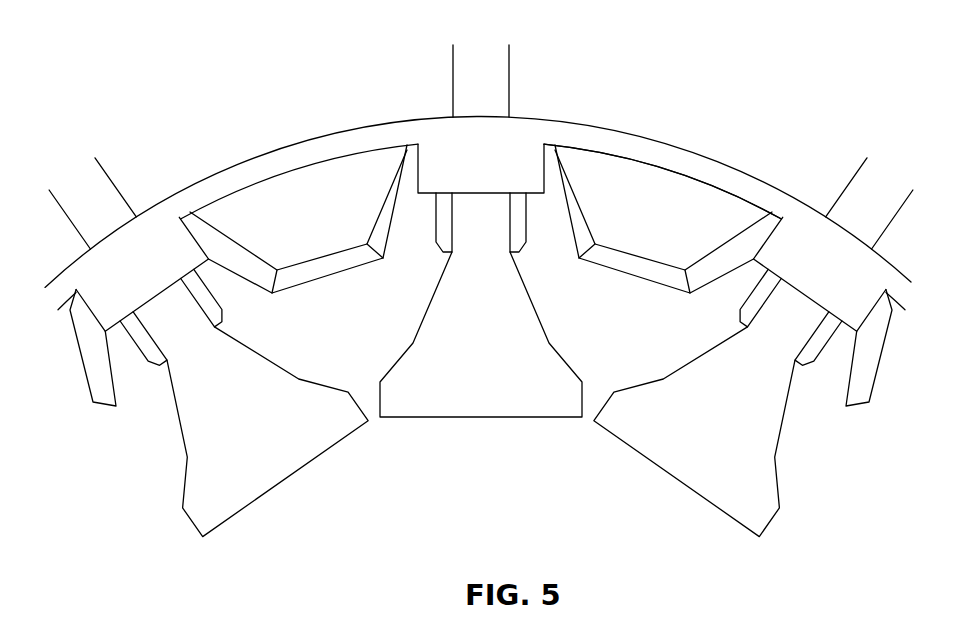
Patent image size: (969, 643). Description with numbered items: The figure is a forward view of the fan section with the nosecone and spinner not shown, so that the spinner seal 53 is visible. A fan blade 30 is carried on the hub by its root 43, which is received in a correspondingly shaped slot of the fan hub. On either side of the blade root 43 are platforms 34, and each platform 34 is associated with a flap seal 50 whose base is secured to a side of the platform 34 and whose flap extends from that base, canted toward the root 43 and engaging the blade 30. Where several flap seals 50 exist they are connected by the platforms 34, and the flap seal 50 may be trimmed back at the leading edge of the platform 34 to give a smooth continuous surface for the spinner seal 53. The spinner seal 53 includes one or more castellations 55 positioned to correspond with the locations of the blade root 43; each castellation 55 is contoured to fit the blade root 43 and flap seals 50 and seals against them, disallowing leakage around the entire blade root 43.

The fan blade 30 is at (490, 42).
The platform 34 is at (647, 182).
The root 43 is at (479, 384).
The flap seal 50 is at (570, 212).
The spinner seal 53 is at (322, 136).
The castellation 55 is at (510, 153).